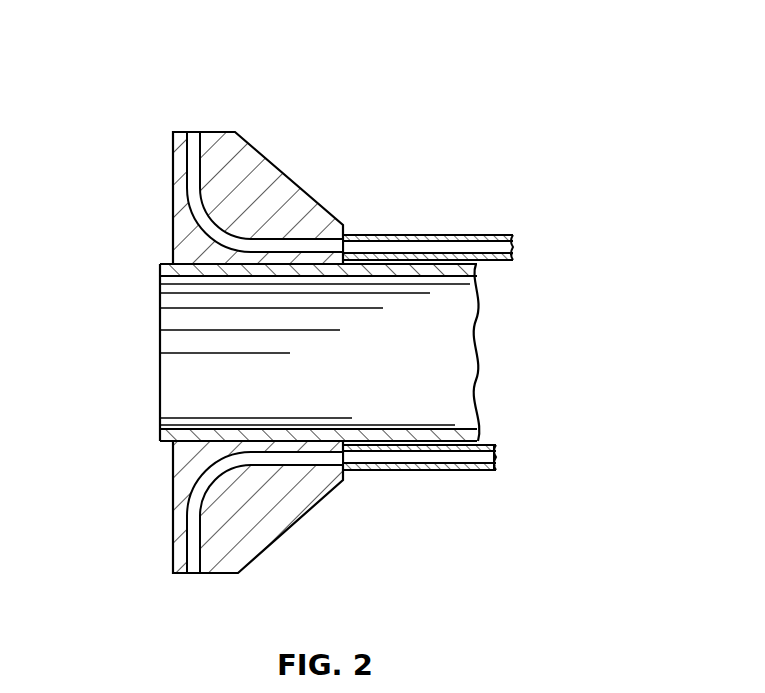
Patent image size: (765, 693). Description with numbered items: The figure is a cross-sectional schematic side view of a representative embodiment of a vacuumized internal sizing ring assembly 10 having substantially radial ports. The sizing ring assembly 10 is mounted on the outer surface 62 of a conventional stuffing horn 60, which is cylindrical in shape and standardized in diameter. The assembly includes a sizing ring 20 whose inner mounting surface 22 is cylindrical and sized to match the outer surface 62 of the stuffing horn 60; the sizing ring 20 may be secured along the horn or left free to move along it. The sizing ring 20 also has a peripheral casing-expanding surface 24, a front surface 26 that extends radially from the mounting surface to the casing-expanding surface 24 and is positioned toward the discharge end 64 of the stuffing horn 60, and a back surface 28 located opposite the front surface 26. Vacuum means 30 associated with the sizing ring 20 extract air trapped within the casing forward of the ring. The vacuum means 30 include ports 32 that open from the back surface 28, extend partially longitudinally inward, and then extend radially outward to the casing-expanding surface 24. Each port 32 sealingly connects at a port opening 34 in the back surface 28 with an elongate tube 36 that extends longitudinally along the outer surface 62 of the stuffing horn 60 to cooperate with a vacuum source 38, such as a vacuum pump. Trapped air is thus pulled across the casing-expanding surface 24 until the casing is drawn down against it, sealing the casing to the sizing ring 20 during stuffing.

The sizing ring assembly 10 is at (329, 328).
The sizing ring 20 is at (303, 328).
The inner mounting surface 22 is at (158, 300).
The casing-expanding surface 24 is at (212, 131).
The front surface 26 is at (212, 528).
The back surface 28 is at (349, 229).
The vacuum means 30 is at (460, 505).
The port 32 is at (199, 568).
The port opening 34 is at (345, 483).
The elongate tube 36 is at (488, 481).
The vacuum source 38 is at (527, 250).
The stuffing horn 60 is at (319, 352).
The outer surface 62 is at (478, 267).
The discharge end 64 is at (158, 393).